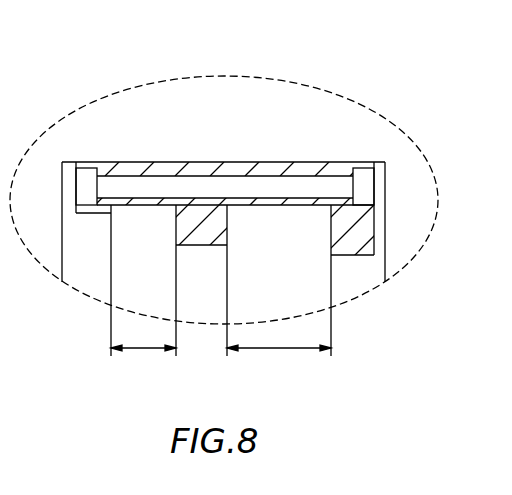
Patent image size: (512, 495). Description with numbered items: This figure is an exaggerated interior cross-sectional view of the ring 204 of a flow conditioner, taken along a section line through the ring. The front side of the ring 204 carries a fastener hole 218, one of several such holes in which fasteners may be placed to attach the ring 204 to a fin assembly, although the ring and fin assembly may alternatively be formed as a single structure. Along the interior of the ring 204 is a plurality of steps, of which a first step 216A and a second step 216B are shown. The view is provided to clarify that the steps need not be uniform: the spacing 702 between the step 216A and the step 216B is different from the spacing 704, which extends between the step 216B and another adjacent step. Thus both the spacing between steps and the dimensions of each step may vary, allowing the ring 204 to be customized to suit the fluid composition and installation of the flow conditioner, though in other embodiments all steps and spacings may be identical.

The ring 204 is at (318, 133).
The fastener hole 218 is at (376, 187).
The step 216A is at (366, 257).
The step 216B is at (197, 246).
The spacing 702 is at (289, 350).
The spacing 704 is at (137, 350).